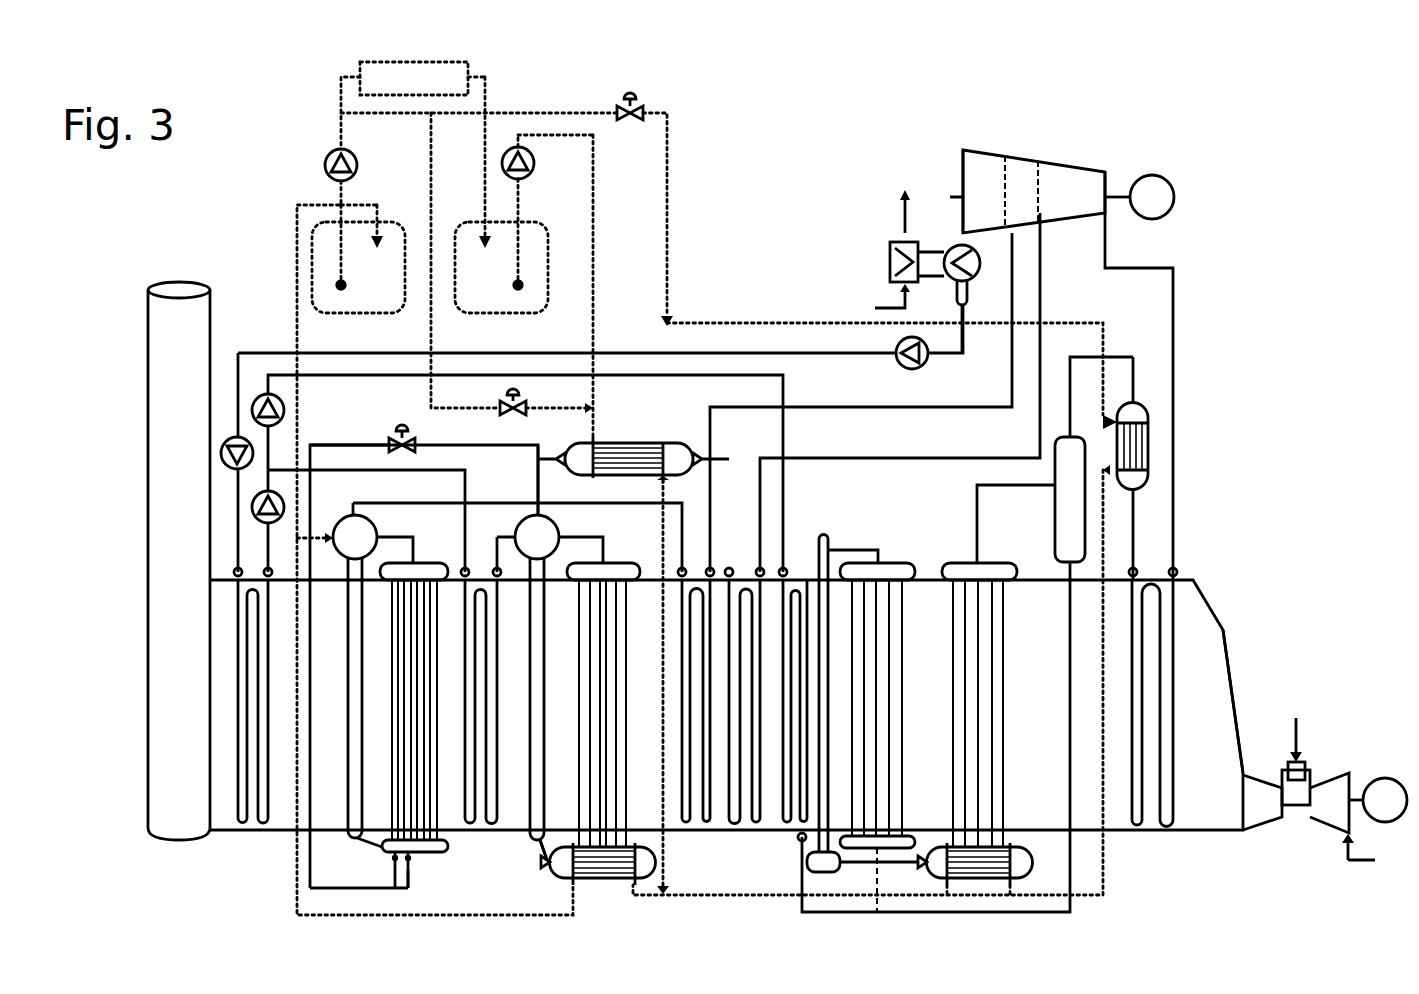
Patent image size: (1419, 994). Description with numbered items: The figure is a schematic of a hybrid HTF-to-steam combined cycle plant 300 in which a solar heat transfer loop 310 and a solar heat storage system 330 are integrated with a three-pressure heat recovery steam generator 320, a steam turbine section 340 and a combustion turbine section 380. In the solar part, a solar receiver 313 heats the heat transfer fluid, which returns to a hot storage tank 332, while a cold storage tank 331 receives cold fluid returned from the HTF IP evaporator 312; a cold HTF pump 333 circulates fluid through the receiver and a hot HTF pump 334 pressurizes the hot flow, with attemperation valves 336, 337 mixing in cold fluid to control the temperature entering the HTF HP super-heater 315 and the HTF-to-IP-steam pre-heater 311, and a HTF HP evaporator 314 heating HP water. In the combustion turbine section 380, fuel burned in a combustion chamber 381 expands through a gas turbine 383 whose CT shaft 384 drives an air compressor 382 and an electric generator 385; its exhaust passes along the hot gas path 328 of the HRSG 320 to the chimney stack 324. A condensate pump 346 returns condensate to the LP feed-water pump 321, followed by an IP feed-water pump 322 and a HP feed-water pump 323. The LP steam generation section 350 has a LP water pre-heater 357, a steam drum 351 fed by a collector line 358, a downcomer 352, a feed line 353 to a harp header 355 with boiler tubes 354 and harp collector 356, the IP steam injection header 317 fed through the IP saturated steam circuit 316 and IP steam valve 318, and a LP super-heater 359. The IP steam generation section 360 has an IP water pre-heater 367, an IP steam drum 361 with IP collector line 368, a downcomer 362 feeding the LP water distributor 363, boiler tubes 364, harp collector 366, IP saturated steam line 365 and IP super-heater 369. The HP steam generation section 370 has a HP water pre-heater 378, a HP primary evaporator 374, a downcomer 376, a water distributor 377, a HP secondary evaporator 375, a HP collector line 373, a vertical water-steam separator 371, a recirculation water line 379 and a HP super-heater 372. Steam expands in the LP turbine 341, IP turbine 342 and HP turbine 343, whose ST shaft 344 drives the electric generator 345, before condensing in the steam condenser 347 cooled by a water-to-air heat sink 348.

The hybrid HTF-to-steam combined cycle plant 300 is at (1222, 164).
The solar heat transfer loop 310 is at (685, 190).
The HTF-to-IP-steam pre-heater 311 is at (628, 443).
The HTF IP evaporator 312 is at (598, 881).
The solar receiver 313 is at (414, 78).
The HTF HP evaporator 314 is at (978, 873).
The HTF HP super-heater 315 is at (1142, 486).
The IP saturated steam circuit 316 is at (360, 426).
The IP steam injection header 317 is at (411, 859).
The IP steam valve 318 is at (398, 430).
The heat recovery steam generator 320 is at (266, 842).
The LP feed-water pump 321 is at (232, 466).
The IP feed-water pump 322 is at (264, 524).
The HP feed-water pump 323 is at (259, 398).
The chimney stack 324 is at (179, 561).
The hot gas path 328 is at (1180, 716).
The solar heat storage system 330 is at (270, 220).
The cold storage tank 331 is at (358, 259).
The hot storage tank 332 is at (501, 195).
The cold HTF pump 333 is at (352, 160).
The hot HTF pump 334 is at (528, 160).
The attemperation valve 336 is at (622, 106).
The attemperation valve 337 is at (506, 398).
The steam turbine section 340 is at (1075, 151).
The LP turbine 341 is at (982, 191).
The IP turbine 342 is at (1021, 191).
The HP turbine 343 is at (1080, 192).
The steam turbine shaft 344 is at (1113, 204).
The electric generator 345 is at (1168, 207).
The condensate pump 346 is at (900, 371).
The steam condenser 347 is at (968, 293).
The water-to-air heat sink 348 is at (893, 258).
The LP steam generation section 350 is at (457, 842).
The LP steam drum 351 is at (355, 537).
The LP downcomer 352 is at (353, 695).
The feed line 353 is at (388, 845).
The boiler tubes 354 is at (395, 695).
The harp header 355 is at (388, 848).
The harp collector 356 is at (424, 569).
The LP water pre-heater 357 is at (243, 752).
The collector line 358 is at (393, 535).
The LP super-heater 359 is at (702, 823).
The IP steam generation section 360 is at (709, 860).
The IP steam drum 361 is at (537, 537).
The IP downcomer 362 is at (540, 668).
The LP water distributor 363 is at (534, 854).
The boiler tubes 364 is at (580, 708).
The IP saturated steam line 365 is at (535, 491).
The harp collector 366 is at (612, 570).
The IP water pre-heater 367 is at (496, 715).
The IP collector line 368 is at (576, 537).
The IP super-heater 369 is at (751, 823).
The HP steam generation section 370 is at (1119, 845).
The vertical water-steam separator 371 is at (1064, 501).
The HP super-heater 372 is at (1176, 680).
The HP collector line 373 is at (977, 522).
The HP primary evaporator 374 is at (898, 700).
The HP secondary evaporator 375 is at (1001, 700).
The HP downcomer 376 is at (822, 533).
The water distributor 377 is at (823, 859).
The HP water pre-heater 378 is at (786, 823).
The recirculation water line 379 is at (1068, 752).
The combustion turbine section 380 is at (1340, 741).
The combustion chamber 381 is at (1299, 766).
The air compressor 382 is at (1331, 803).
The gas turbine 383 is at (1262, 803).
The CT shaft 384 is at (1353, 797).
The electric generator 385 is at (1389, 783).